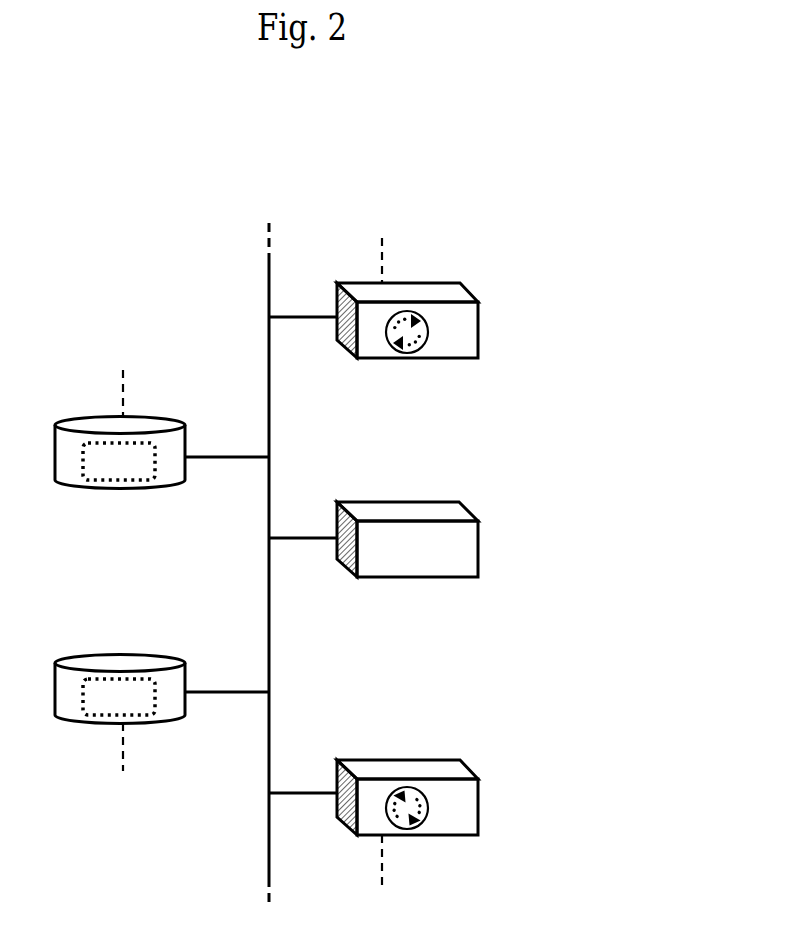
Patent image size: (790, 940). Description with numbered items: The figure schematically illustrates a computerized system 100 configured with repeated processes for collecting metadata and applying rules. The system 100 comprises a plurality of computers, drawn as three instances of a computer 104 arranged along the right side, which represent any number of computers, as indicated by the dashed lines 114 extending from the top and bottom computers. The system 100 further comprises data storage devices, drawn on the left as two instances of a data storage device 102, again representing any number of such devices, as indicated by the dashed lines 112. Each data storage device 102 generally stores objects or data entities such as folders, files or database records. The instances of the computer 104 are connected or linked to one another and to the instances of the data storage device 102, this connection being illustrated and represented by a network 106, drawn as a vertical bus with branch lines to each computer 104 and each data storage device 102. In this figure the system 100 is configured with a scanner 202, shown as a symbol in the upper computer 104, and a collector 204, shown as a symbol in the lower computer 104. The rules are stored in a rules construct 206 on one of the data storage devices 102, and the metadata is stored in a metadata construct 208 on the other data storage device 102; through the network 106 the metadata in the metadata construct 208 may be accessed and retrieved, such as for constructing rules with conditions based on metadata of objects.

The computerized system 100 is at (281, 180).
The data storage device 102 is at (153, 489).
The computer 104 is at (440, 578).
The network 106 is at (210, 455).
The dashed lines 112 is at (123, 394).
The dashed lines 114 is at (381, 272).
The scanner 202 is at (393, 351).
The collector 204 is at (422, 826).
The rules construct 206 is at (87, 479).
The metadata construct 208 is at (87, 714).